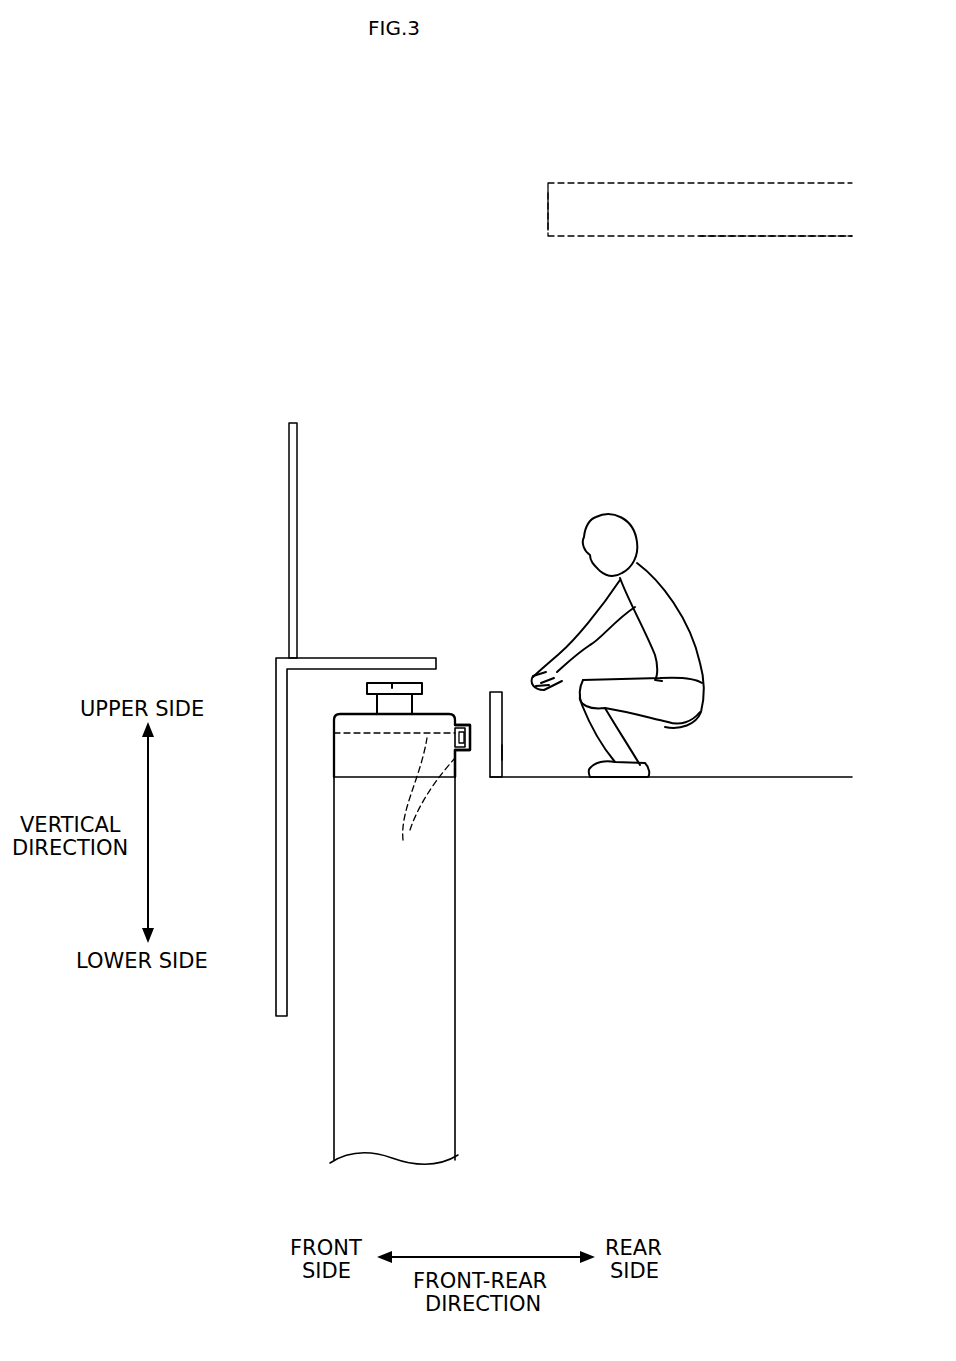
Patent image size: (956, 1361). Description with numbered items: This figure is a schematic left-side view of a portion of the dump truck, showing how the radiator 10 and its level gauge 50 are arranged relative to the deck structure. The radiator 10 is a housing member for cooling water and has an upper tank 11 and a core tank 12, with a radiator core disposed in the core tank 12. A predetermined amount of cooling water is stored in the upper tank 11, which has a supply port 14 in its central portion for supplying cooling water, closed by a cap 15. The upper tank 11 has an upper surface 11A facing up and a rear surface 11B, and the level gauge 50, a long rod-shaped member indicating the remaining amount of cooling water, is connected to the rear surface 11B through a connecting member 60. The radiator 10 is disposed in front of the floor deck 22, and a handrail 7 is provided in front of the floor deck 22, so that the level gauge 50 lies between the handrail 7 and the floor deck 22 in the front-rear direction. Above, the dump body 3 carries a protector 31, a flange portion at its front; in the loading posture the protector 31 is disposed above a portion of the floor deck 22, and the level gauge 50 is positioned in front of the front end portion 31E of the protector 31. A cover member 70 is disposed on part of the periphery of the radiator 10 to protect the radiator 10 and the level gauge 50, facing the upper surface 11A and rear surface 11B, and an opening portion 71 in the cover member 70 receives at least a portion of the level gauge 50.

The dump body 3 is at (793, 181).
The protector 31 is at (765, 240).
The front end portion 31E is at (546, 212).
The handrail 7 is at (289, 508).
The radiator 10 is at (397, 854).
The upper tank 11 is at (334, 741).
The upper surface 11A is at (434, 713).
The rear surface 11B is at (455, 775).
The core tank 12 is at (455, 1013).
The supply port 14 is at (393, 682).
The cap 15 is at (412, 683).
The floor deck 22 is at (757, 777).
The level gauge 50 is at (460, 724).
The connecting member 60 is at (457, 752).
The cover member 70 is at (510, 753).
The opening portion 71 is at (492, 679).